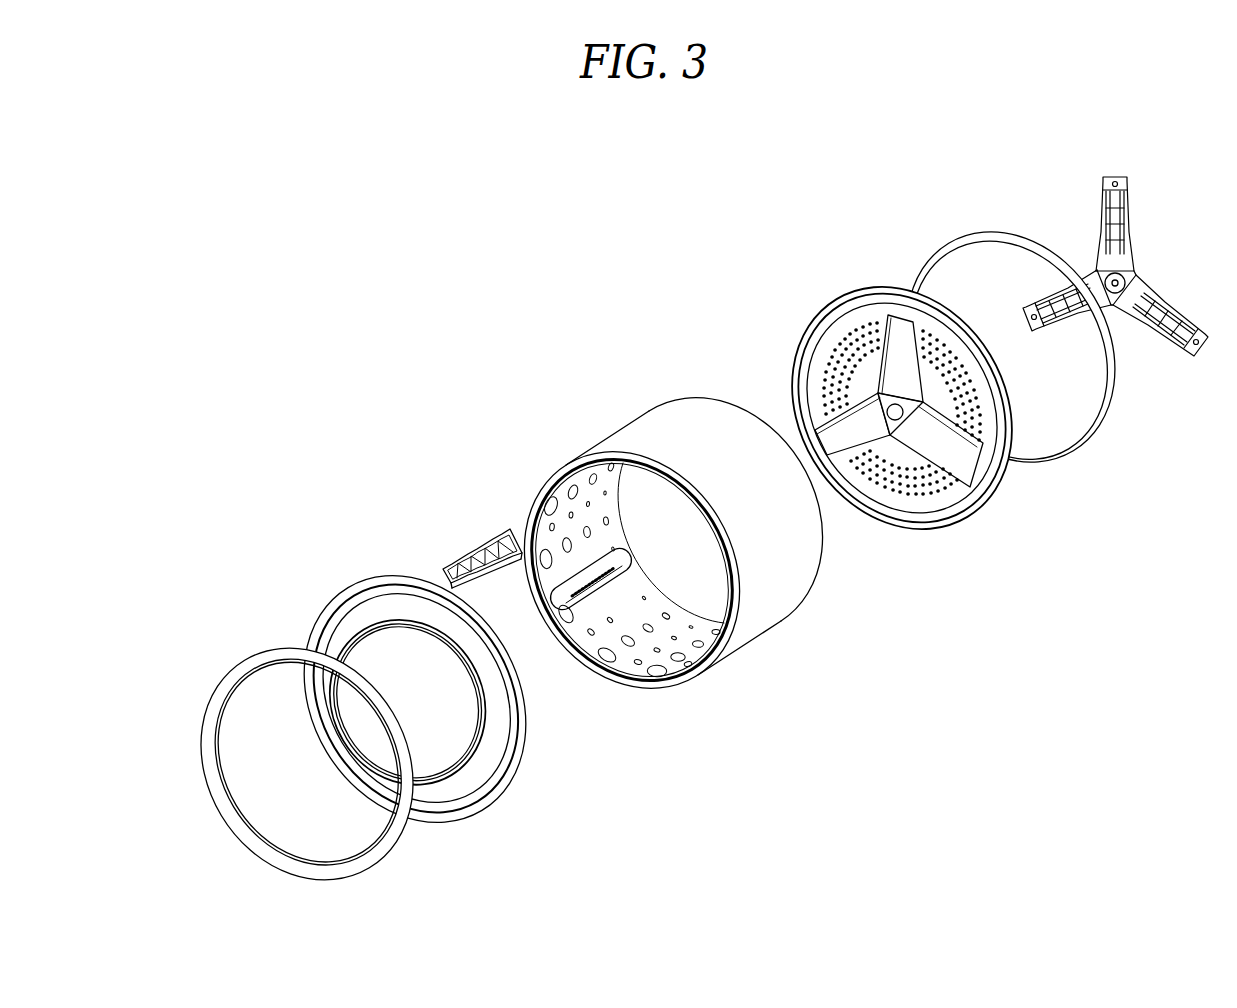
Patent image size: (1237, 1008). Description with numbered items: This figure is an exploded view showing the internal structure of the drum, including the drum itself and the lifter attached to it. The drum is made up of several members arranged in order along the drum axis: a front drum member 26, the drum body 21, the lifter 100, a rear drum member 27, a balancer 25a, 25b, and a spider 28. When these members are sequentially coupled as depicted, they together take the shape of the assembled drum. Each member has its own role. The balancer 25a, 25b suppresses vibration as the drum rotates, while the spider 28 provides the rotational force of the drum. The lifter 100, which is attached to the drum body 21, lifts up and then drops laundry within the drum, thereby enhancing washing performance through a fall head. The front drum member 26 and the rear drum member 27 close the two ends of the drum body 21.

The drum body 21 is at (630, 419).
The balancer 25a is at (253, 652).
The balancer 25b is at (956, 232).
The front drum member 26 is at (360, 583).
The rear drum member 27 is at (838, 300).
The spider 28 is at (1100, 180).
The lifter 100 is at (583, 573).